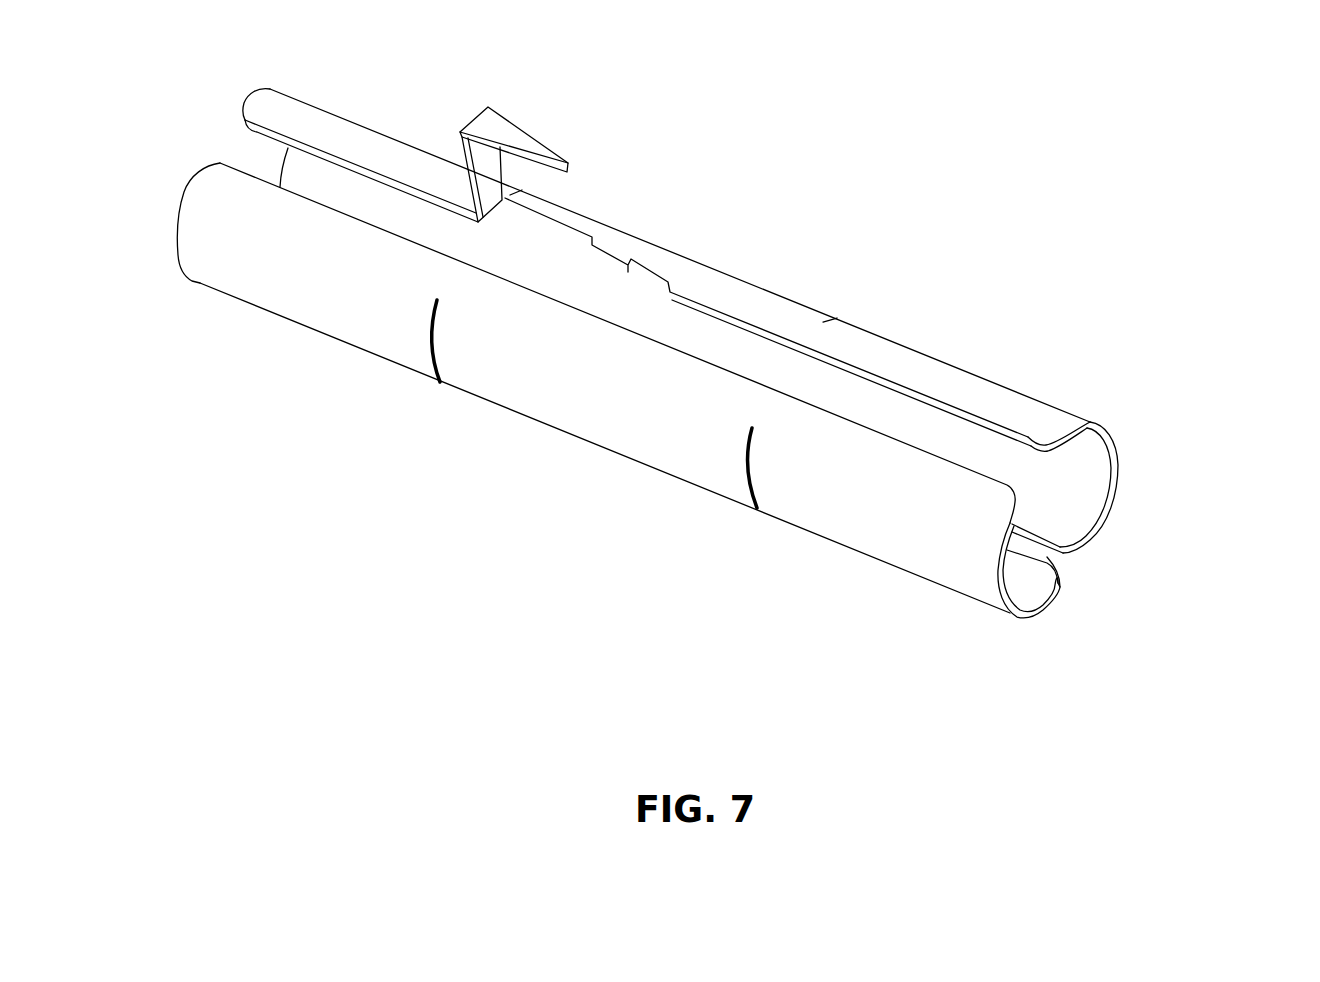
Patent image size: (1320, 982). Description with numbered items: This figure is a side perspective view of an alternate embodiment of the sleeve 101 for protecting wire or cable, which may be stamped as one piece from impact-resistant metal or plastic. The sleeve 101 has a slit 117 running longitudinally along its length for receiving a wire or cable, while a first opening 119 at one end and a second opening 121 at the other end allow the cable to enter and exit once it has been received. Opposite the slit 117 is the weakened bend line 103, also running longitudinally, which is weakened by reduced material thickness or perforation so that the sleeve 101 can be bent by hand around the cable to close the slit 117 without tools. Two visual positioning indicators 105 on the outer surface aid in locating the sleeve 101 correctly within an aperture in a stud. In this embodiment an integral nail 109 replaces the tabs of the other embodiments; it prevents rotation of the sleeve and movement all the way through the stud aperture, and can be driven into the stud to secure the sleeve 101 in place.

The sleeve 101 is at (610, 398).
The weakened bend line 103 is at (1080, 571).
The visual positioning indicator 105 is at (428, 343).
The integral nail 109 is at (517, 142).
The slit 117 is at (1042, 467).
The first opening 119 is at (172, 170).
The second opening 121 is at (1126, 530).